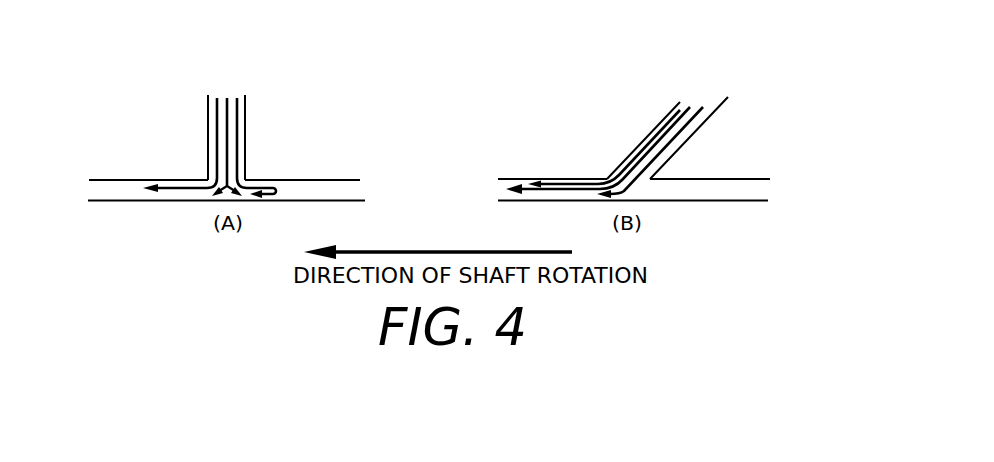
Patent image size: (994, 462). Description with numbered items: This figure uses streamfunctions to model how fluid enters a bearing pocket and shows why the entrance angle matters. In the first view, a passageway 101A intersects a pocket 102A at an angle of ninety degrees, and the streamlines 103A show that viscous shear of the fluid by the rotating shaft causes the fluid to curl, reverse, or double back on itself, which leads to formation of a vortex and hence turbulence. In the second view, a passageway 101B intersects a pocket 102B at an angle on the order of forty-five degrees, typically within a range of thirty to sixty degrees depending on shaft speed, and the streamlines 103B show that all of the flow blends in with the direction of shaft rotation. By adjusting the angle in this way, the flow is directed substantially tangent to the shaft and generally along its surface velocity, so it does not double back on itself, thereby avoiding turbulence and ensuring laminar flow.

The passageway 101A is at (248, 129).
The pocket 102A is at (358, 153).
The streamlines 103A is at (220, 97).
The passageway 101B is at (678, 152).
The pocket 102B is at (728, 190).
The streamlines 103B is at (695, 107).